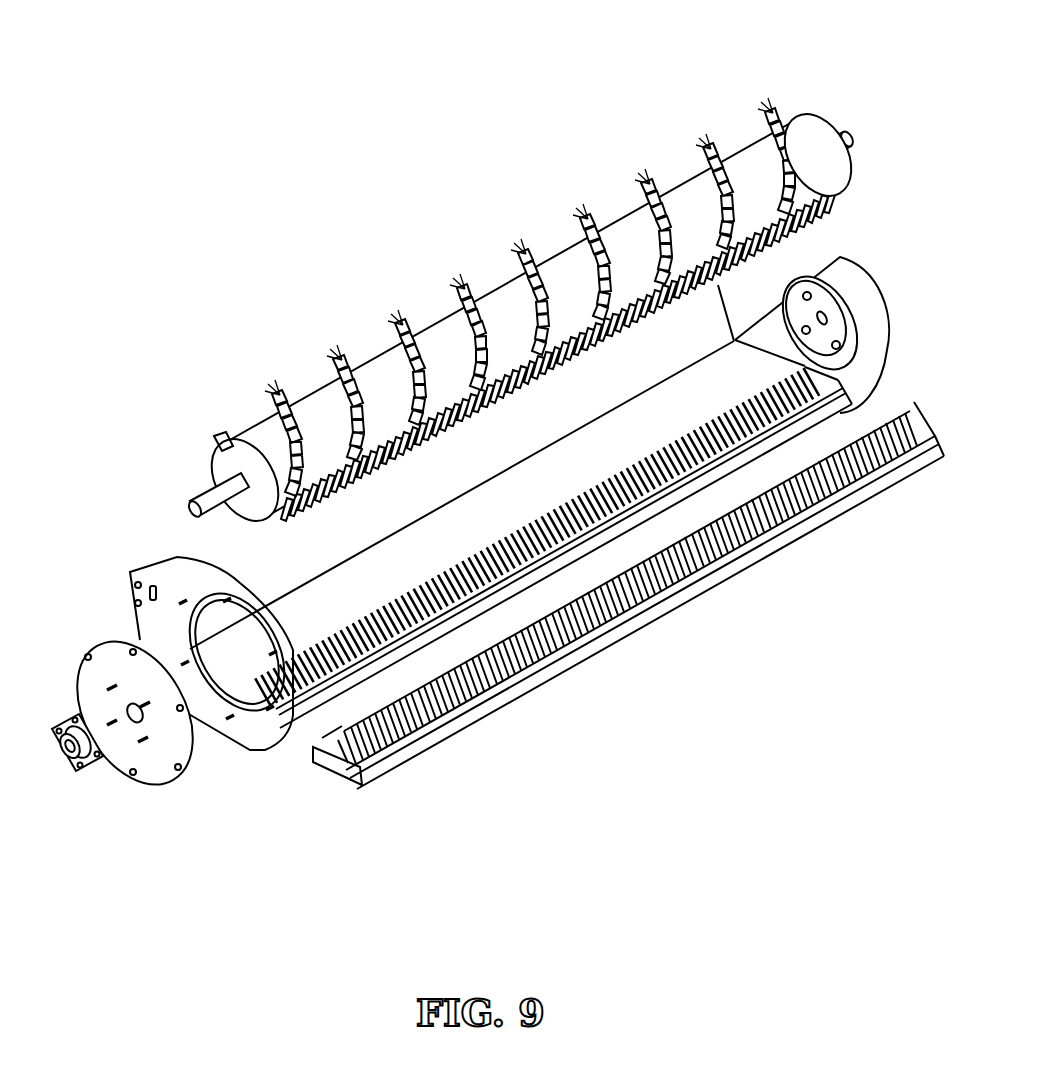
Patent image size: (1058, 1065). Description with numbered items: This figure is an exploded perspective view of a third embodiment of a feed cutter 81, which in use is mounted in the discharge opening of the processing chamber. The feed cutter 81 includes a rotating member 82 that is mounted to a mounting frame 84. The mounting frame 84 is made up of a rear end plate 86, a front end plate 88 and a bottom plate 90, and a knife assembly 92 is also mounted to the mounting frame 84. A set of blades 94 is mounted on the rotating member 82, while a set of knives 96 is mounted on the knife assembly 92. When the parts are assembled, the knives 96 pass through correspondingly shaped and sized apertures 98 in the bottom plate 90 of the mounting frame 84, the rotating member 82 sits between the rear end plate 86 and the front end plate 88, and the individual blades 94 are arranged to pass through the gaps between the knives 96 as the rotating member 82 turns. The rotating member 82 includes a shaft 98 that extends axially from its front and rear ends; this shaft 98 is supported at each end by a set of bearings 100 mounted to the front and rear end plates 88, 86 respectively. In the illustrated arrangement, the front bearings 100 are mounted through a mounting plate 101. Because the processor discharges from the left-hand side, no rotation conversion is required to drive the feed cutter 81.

The feed cutter 81 is at (269, 211).
The rotating member 82 is at (383, 357).
The mounting frame 84 is at (871, 283).
The rear end plate 86 is at (840, 257).
The front end plate 88 is at (150, 560).
The bottom plate 90 is at (333, 573).
The knife assembly 92 is at (440, 743).
The blades 94 is at (283, 392).
The knives 96 is at (917, 415).
The shaft 98 is at (523, 523).
The bearings 100 is at (102, 757).
The mounting plate 101 is at (192, 767).